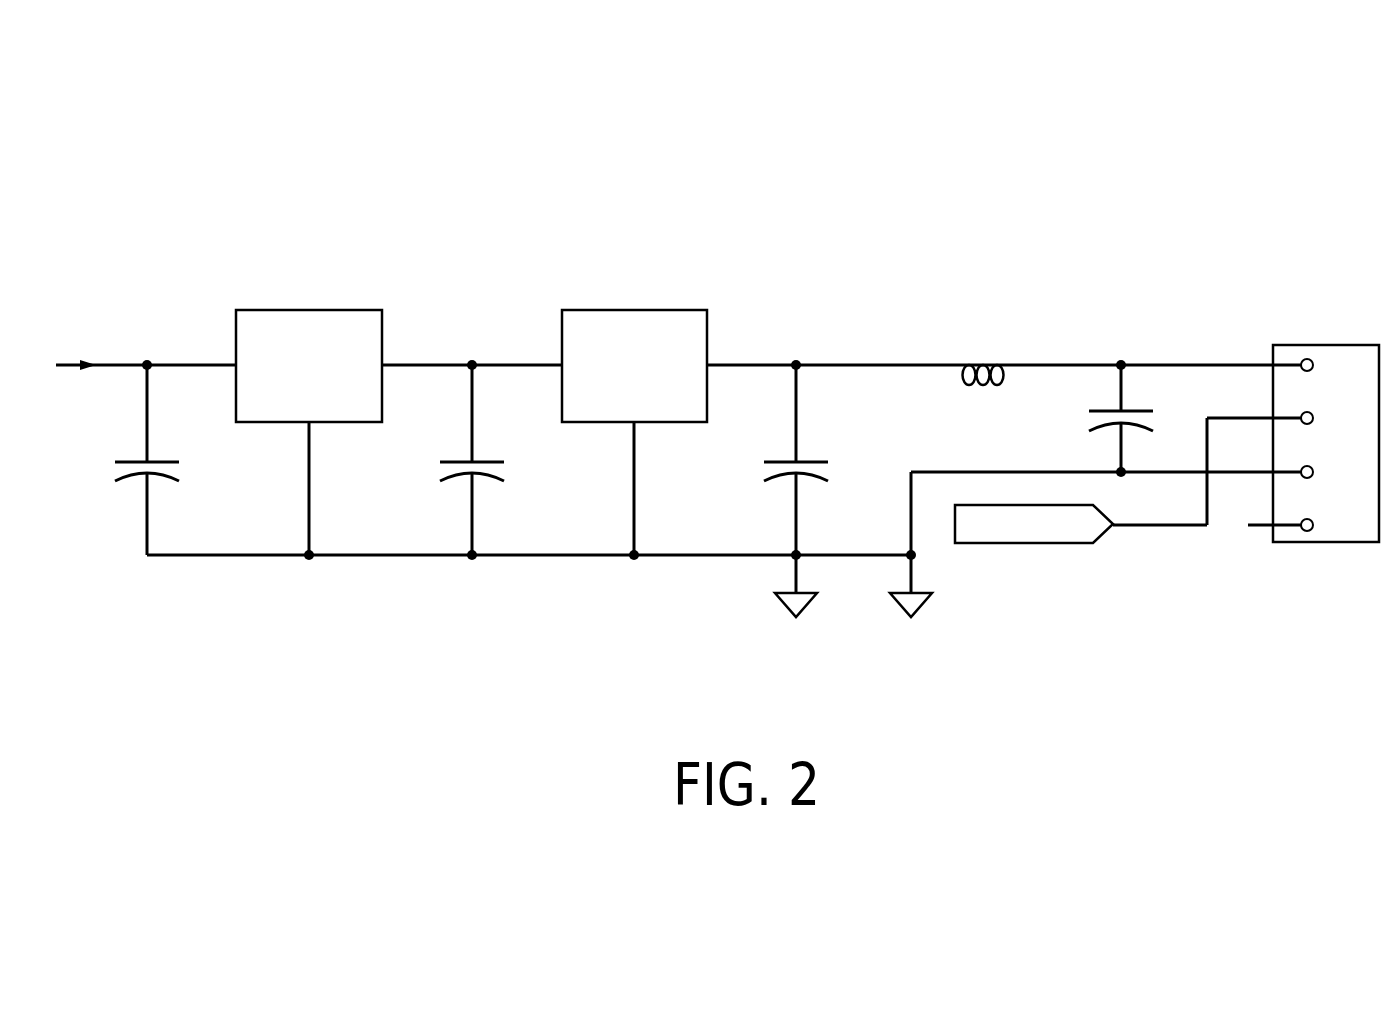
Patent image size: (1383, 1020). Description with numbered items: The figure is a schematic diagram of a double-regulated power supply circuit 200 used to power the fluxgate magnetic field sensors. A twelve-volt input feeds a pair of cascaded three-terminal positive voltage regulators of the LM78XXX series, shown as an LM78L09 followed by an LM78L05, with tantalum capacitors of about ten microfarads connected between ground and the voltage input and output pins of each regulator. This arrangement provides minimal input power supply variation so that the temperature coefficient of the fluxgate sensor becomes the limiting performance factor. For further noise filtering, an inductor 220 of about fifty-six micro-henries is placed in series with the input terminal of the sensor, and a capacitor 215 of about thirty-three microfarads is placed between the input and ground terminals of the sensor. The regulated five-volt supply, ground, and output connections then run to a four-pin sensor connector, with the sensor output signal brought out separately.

The double-regulated power supply circuit 200 is at (717, 388).
The capacitor 215 is at (1094, 429).
The inductor 220 is at (962, 372).